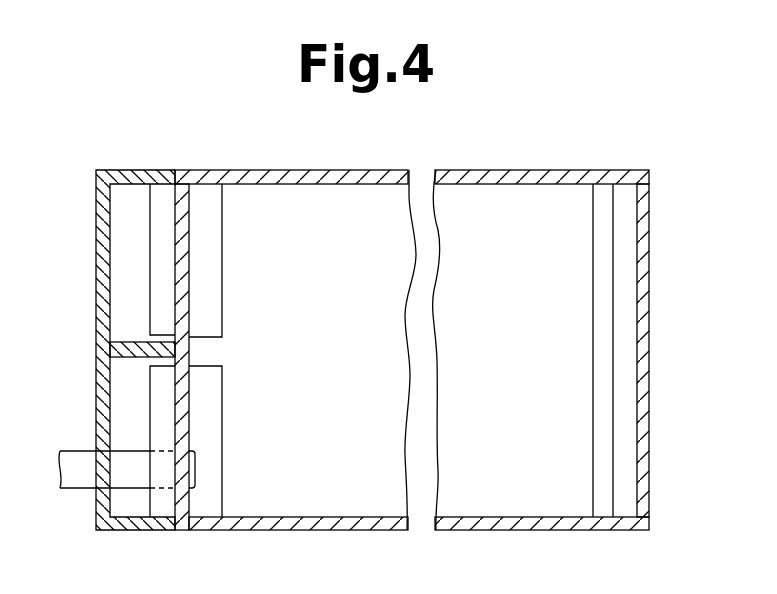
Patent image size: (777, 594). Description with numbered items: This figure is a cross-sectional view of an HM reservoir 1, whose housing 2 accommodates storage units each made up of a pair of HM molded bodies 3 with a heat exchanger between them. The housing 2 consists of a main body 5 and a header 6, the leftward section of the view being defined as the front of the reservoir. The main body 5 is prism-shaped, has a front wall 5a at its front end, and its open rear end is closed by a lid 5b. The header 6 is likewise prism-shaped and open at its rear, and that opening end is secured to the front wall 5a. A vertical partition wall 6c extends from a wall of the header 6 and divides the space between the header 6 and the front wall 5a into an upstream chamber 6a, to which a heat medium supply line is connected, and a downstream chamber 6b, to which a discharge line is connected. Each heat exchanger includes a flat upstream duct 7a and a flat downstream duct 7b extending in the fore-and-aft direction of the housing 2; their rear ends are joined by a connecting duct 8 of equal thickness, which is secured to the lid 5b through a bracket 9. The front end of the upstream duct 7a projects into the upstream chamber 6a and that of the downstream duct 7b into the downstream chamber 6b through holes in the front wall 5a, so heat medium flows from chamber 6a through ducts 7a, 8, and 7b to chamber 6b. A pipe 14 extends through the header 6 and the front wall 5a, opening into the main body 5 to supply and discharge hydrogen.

The HM reservoir 1 is at (633, 155).
The housing 2 is at (170, 157).
The HM molded body 3 is at (325, 508).
The main body 5 is at (316, 171).
The front wall 5a is at (185, 222).
The lid 5b is at (645, 453).
The header 6 is at (97, 252).
The upstream chamber 6a is at (123, 403).
The downstream chamber 6b is at (123, 308).
The partition wall 6c is at (140, 343).
The upstream duct 7a is at (210, 505).
The downstream duct 7b is at (199, 195).
The connecting duct 8 is at (603, 508).
The bracket 9 is at (623, 293).
The pipe 14 is at (76, 484).